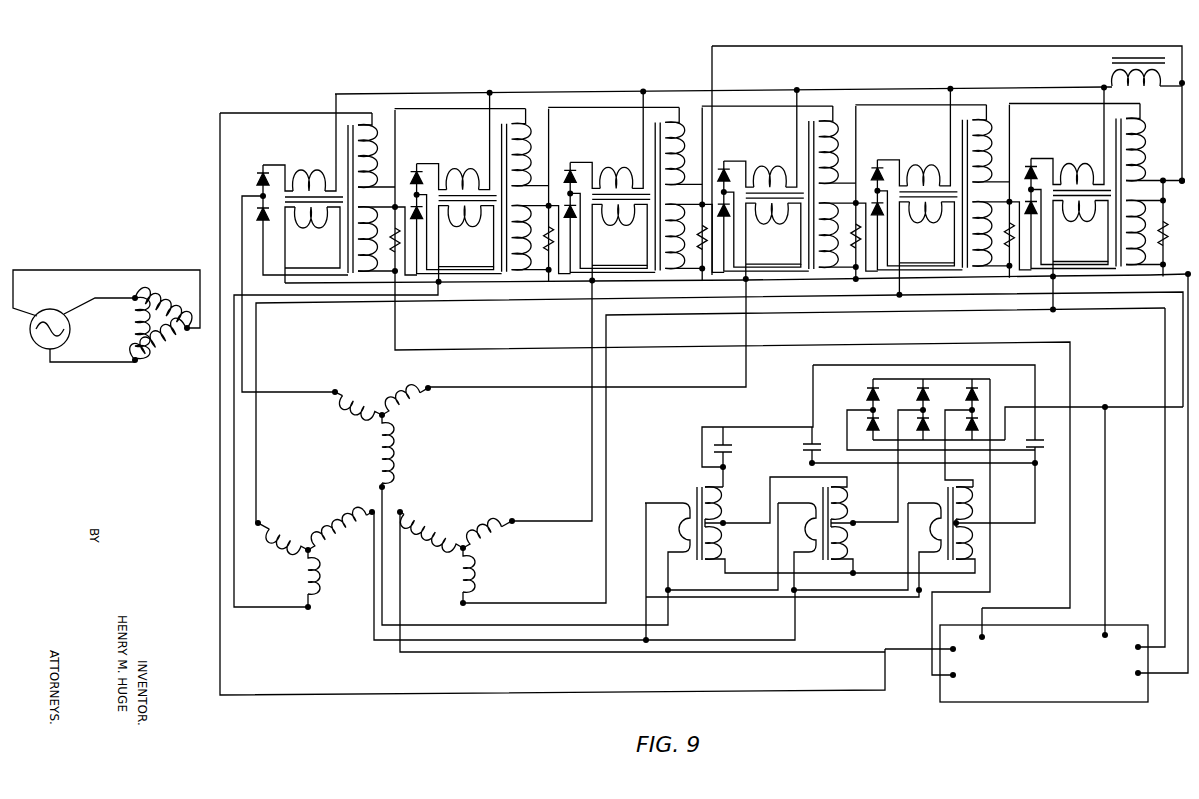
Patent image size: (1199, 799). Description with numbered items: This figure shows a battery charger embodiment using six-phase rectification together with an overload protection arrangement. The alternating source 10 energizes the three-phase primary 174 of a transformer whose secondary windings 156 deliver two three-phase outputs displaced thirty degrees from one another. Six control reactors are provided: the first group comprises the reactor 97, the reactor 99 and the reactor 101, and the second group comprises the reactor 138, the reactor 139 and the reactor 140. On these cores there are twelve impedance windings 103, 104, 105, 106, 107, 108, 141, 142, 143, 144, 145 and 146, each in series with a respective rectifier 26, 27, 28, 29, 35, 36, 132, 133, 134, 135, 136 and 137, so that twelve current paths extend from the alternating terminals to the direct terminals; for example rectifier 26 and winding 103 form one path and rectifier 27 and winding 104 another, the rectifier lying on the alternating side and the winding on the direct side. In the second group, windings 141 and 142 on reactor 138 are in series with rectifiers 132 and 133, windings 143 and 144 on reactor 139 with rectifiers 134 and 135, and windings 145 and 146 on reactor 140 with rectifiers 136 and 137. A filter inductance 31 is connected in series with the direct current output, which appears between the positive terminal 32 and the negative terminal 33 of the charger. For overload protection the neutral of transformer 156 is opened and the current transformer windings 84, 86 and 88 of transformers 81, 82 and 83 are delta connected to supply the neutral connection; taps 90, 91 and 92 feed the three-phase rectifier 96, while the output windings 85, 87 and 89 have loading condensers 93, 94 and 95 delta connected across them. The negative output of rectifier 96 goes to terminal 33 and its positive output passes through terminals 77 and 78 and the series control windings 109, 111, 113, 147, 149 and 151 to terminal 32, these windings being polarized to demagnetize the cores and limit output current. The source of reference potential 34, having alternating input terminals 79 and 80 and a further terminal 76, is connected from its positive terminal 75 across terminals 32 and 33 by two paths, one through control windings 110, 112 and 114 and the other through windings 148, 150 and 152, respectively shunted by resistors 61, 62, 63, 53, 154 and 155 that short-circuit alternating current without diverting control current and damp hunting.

The source 10 is at (45, 316).
The three-phase primary 174 is at (171, 367).
The rectifier 26 is at (250, 174).
The rectifier 27 is at (284, 230).
The rectifier 28 is at (404, 173).
The rectifier 29 is at (456, 229).
The rectifier 35 is at (557, 171).
The rectifier 36 is at (601, 226).
The rectifier 132 is at (709, 164).
The rectifier 133 is at (763, 226).
The rectifier 134 is at (862, 163).
The rectifier 135 is at (916, 225).
The rectifier 136 is at (1016, 162).
The rectifier 137 is at (1070, 224).
The impedance winding 103 is at (299, 142).
The impedance winding 104 is at (312, 245).
The impedance winding 105 is at (455, 140).
The impedance winding 106 is at (465, 245).
The impedance winding 107 is at (608, 138).
The impedance winding 108 is at (618, 243).
The impedance winding 141 is at (762, 137).
The impedance winding 142 is at (772, 242).
The impedance winding 143 is at (915, 136).
The impedance winding 144 is at (925, 250).
The impedance winding 145 is at (1069, 135).
The impedance winding 146 is at (1079, 257).
The control reactor 97 is at (307, 193).
The control winding 111 is at (472, 188).
The control winding 113 is at (625, 186).
The control winding 147 is at (779, 185).
The control winding 149 is at (932, 184).
The control winding 151 is at (1097, 185).
The control winding 109 is at (378, 232).
The control winding 112 is at (532, 230).
The control winding 114 is at (685, 228).
The control winding 148 is at (839, 227).
The control winding 150 is at (992, 226).
The control winding 152 is at (1146, 225).
The control winding 110 is at (372, 277).
The resistor 61 is at (394, 256).
The resistor 62 is at (543, 246).
The resistor 63 is at (709, 244).
The resistor 53 is at (845, 253).
The resistor 154 is at (1005, 261).
The resistor 155 is at (1160, 240).
The control reactor 99 is at (438, 293).
The control reactor 101 is at (669, 290).
The control reactor 138 is at (822, 288).
The control reactor 139 is at (976, 287).
The control reactor 140 is at (1101, 286).
The negative terminal 33 is at (1170, 279).
The filter inductance 31 is at (1112, 78).
The positive terminal 32 is at (1169, 91).
The transformer secondary windings 156 is at (368, 492).
The three-phase rectifier 96 is at (914, 403).
The loading condenser 93 is at (1043, 453).
The loading condenser 94 is at (805, 446).
The loading condenser 95 is at (717, 448).
The current transformer 81 is at (690, 572).
The current transformer 82 is at (816, 535).
The current transformer 83 is at (940, 535).
The current transformer winding 84 is at (667, 548).
The current transformer winding 86 is at (797, 548).
The current transformer winding 88 is at (924, 548).
The output winding 85 is at (725, 512).
The tap 90 is at (779, 550).
The output winding 87 is at (798, 502).
The tap 91 is at (854, 546).
The output winding 89 is at (994, 495).
The tap 92 is at (984, 526).
The source of reference potential 34 is at (1057, 703).
The positive terminal 75 is at (993, 624).
The terminal 76 is at (1099, 522).
The terminal 77 is at (920, 642).
The terminal 78 is at (955, 537).
The alternating current input terminal 79 is at (1151, 485).
The alternating current input terminal 80 is at (1161, 482).